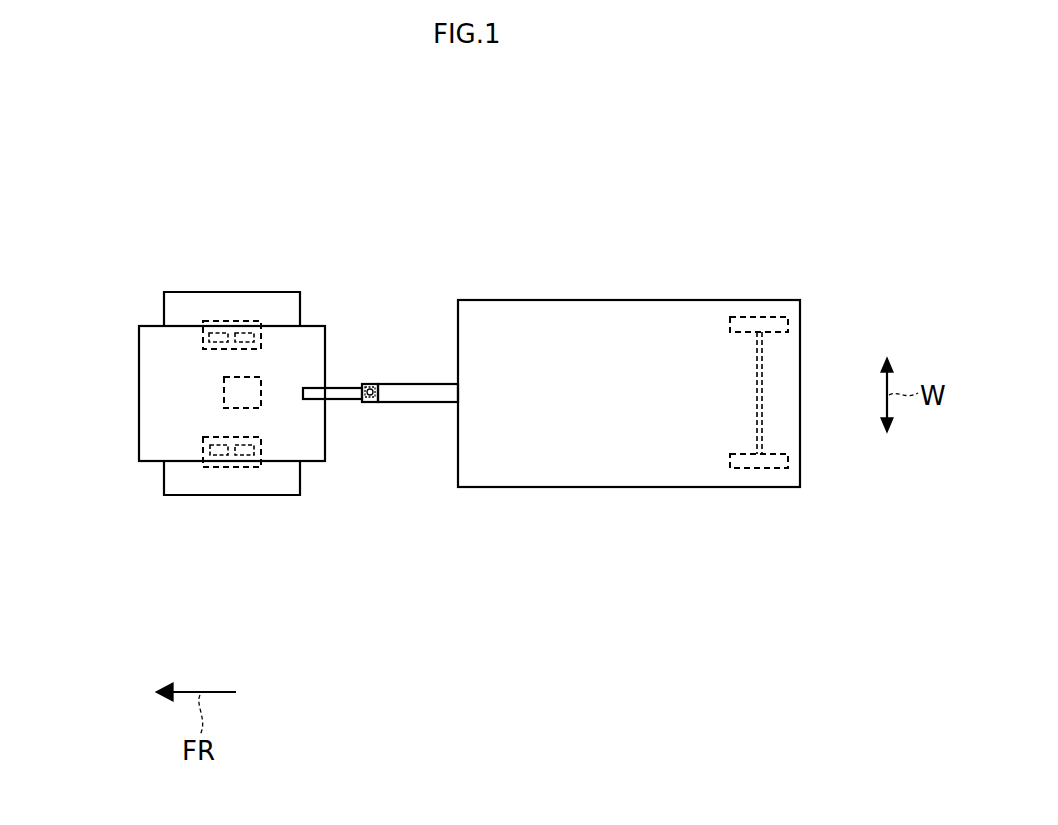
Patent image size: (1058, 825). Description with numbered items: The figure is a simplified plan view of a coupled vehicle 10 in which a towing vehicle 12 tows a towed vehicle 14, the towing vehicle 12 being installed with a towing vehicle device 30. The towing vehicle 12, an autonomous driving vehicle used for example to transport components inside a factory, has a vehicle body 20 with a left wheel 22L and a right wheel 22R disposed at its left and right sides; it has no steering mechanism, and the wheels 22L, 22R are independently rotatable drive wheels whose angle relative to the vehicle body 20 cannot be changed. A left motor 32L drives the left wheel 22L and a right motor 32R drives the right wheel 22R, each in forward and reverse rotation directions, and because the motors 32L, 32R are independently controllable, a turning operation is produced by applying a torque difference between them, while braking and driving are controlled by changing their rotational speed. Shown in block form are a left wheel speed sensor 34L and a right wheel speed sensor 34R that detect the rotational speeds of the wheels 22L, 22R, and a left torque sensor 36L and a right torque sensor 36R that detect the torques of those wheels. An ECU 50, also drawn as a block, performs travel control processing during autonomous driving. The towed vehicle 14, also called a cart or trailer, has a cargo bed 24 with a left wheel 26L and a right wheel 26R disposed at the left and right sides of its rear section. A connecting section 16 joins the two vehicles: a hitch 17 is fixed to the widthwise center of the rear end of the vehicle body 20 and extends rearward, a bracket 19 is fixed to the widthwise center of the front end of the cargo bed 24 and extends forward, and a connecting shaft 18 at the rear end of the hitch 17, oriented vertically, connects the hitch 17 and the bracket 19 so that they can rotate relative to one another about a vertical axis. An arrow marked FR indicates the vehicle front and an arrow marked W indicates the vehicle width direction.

The coupled vehicle 10 is at (418, 177).
The towing vehicle 12 is at (135, 280).
The towed vehicle 14 is at (618, 283).
The connecting section 16 is at (370, 343).
The hitch 17 is at (337, 387).
The connecting shaft 18 is at (368, 403).
The bracket 19 is at (433, 384).
The vehicle body 20 is at (148, 428).
The right wheel 22R is at (183, 300).
The left wheel 22L is at (178, 486).
The cargo bed 24 is at (538, 318).
The right wheel 26R is at (762, 317).
The left wheel 26L is at (762, 468).
The towing vehicle device 30 is at (167, 392).
The right motor 32R is at (205, 340).
The left motor 32L is at (198, 447).
The right wheel speed sensor 34R is at (222, 327).
The left wheel speed sensor 34L is at (220, 457).
The right torque sensor 36R is at (245, 327).
The left torque sensor 36L is at (246, 457).
The ECU 50 is at (225, 392).